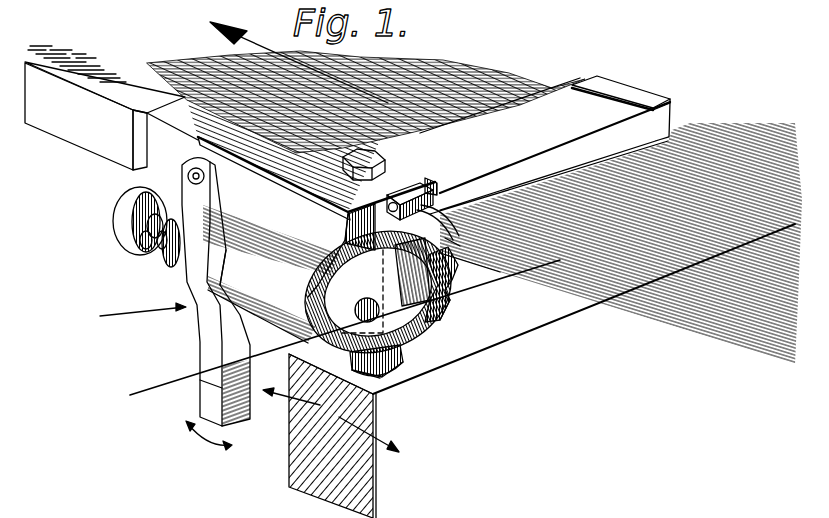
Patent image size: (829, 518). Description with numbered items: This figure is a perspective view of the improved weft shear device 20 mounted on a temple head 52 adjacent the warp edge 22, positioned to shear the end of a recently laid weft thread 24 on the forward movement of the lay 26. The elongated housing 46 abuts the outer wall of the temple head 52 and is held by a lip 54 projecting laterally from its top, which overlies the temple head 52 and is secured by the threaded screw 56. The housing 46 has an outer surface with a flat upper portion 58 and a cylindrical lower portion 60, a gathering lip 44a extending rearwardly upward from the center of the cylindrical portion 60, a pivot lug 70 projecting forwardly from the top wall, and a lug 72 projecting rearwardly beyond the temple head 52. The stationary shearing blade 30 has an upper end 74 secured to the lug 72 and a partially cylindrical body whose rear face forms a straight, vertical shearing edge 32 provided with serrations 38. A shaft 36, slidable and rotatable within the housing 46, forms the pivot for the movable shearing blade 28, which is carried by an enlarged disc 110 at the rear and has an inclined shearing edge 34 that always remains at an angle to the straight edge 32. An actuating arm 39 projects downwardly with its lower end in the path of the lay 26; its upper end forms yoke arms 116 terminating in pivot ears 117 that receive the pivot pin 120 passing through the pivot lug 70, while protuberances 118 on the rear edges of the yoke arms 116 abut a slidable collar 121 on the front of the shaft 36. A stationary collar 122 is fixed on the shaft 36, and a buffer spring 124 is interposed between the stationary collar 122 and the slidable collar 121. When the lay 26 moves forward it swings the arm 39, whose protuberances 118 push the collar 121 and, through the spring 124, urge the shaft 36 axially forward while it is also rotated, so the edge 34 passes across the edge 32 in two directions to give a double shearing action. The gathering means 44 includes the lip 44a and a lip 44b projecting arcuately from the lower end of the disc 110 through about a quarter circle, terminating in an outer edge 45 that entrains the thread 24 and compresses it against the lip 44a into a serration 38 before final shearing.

The weft shear device 20 is at (126, 315).
The warp edge 22 is at (622, 320).
The laid weft thread 24 is at (466, 269).
The lay 26 is at (376, 397).
The movable shearing blade 28 is at (455, 241).
The stationary shearing blade 30 is at (441, 322).
The straight shearing edge 32 is at (452, 318).
The inclined shearing edge 34 is at (428, 278).
The shaft 36 is at (366, 298).
The serrations 38 is at (463, 283).
The actuating arm 39 is at (212, 384).
The gathering means 44 is at (303, 318).
The gathering lip 44a is at (335, 243).
The arcuate lip 44b is at (405, 378).
The outer edge 45 is at (379, 377).
The housing 46 is at (182, 288).
The temple head 52 is at (521, 118).
The lip 54 is at (416, 190).
The threaded screw 56 is at (344, 166).
The flat upper portion 58 is at (356, 186).
The cylindrical lower portion 60 is at (253, 318).
The pivot lug 70 is at (213, 152).
The lug 72 is at (414, 190).
The upper end 74 is at (452, 236).
The enlarged disc 110 is at (402, 328).
The yoke arms 116 is at (197, 189).
The pivot ears 117 is at (187, 177).
The protuberances 118 is at (165, 268).
The pivot pin 120 is at (157, 153).
The slidable collar 121 is at (156, 258).
The stationary collar 122 is at (126, 205).
The buffer spring 124 is at (150, 228).